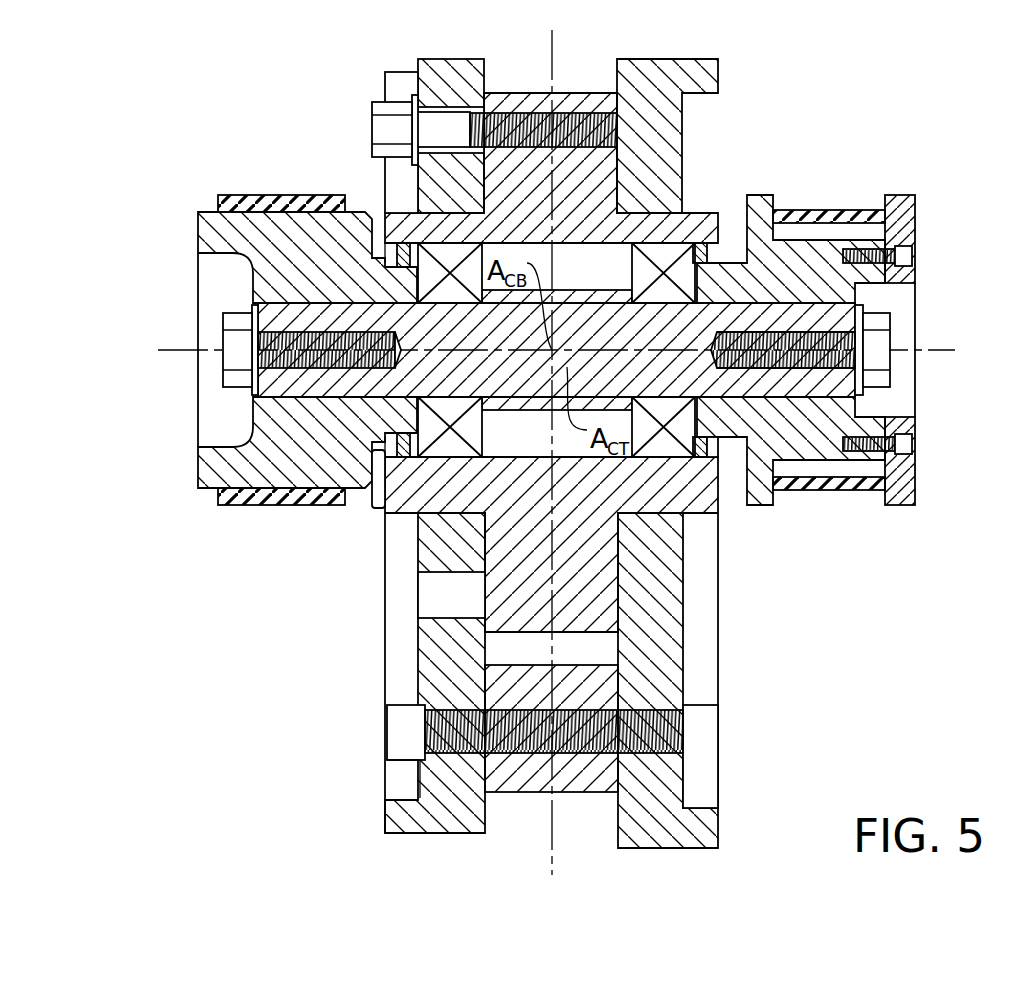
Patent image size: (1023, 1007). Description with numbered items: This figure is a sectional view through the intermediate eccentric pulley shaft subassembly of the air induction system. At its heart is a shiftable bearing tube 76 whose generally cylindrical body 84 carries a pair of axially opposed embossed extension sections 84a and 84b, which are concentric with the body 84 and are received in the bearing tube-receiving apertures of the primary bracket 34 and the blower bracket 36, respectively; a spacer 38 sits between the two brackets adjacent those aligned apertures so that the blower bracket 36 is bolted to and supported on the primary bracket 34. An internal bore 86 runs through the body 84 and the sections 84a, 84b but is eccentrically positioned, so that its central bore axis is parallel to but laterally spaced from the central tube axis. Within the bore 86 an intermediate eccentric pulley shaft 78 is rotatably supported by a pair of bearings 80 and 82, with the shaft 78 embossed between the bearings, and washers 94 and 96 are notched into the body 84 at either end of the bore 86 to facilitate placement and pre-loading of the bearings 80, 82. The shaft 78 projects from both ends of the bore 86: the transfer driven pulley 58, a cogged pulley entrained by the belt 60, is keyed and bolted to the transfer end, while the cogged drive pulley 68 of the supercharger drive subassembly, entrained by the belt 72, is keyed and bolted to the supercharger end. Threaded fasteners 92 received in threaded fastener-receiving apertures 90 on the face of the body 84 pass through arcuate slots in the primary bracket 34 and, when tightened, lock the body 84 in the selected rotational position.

The primary bracket 34 is at (390, 820).
The blower bracket 36 is at (710, 820).
The spacer 38 is at (535, 780).
The transfer driven pulley 58 is at (205, 214).
The belt 60 is at (237, 512).
The drive pulley 68 is at (912, 213).
The belt 72 is at (858, 500).
The bearing tube 76 is at (512, 92).
The intermediate eccentric pulley shaft 78 is at (540, 390).
The bearing 80 is at (385, 225).
The bearing 82 is at (605, 258).
The cylindrical body 84 is at (540, 600).
The extension section 84a is at (392, 505).
The extension section 84b is at (712, 500).
The internal bore 86 is at (655, 232).
The fastener-receiving apertures 90 is at (583, 127).
The threaded fasteners 92 is at (372, 130).
The washer 94 is at (397, 246).
The washer 96 is at (702, 252).